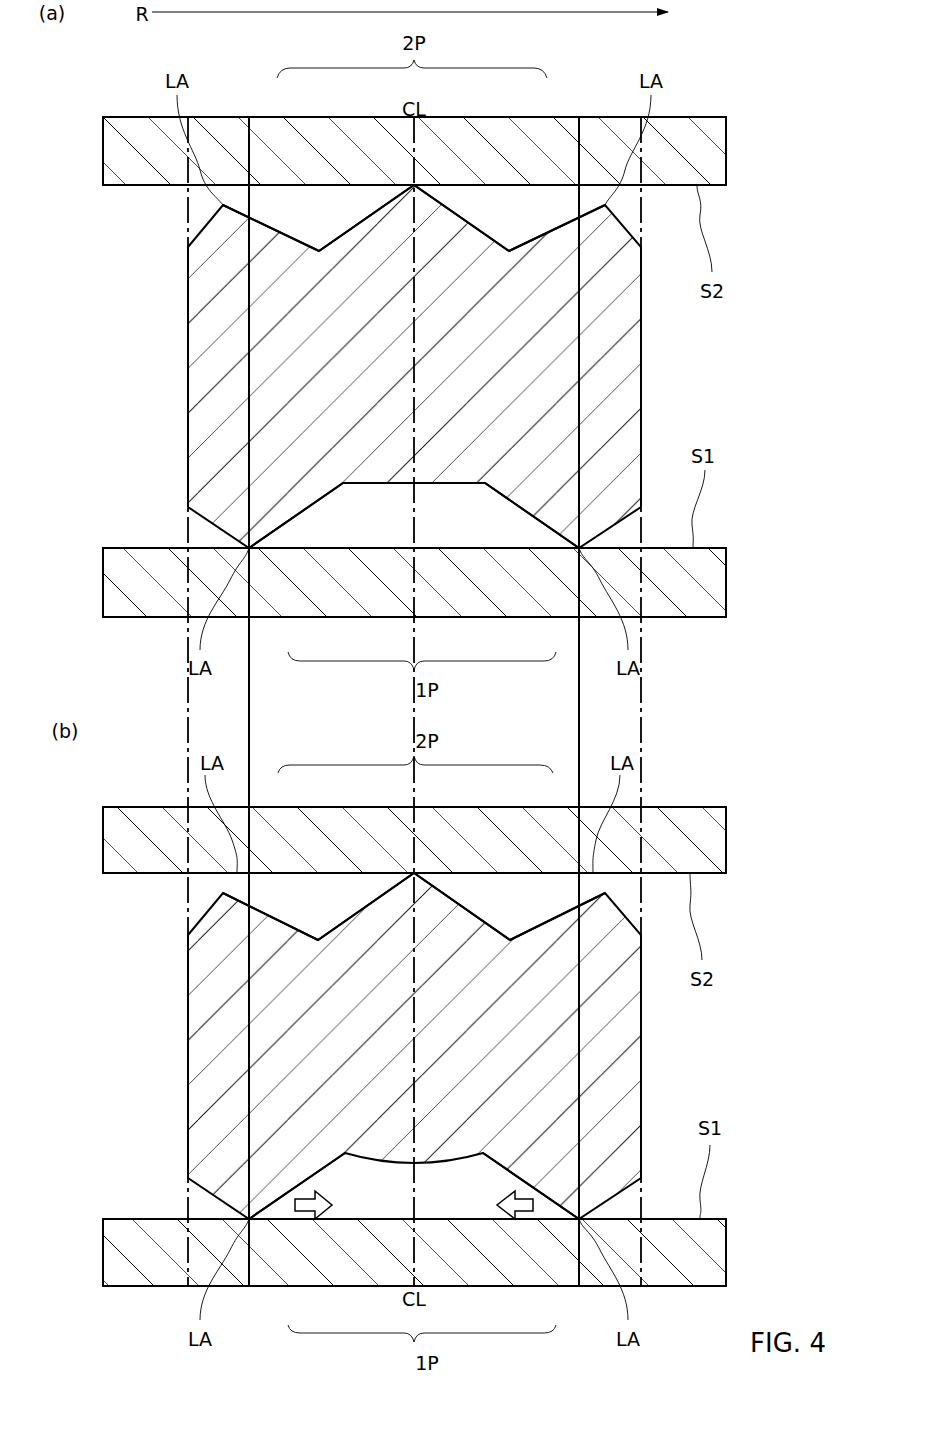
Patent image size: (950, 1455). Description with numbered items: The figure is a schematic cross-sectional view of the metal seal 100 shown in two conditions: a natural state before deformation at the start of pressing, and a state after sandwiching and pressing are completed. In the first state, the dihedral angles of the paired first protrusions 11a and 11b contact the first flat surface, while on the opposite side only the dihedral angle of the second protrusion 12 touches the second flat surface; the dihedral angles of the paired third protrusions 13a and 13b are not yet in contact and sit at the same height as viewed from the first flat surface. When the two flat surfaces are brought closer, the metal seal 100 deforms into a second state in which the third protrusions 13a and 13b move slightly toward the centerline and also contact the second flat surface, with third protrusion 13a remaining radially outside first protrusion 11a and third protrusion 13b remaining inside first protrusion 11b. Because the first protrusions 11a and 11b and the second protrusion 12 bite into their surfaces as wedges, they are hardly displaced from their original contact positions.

The metal seal 100 is at (686, 362).
The first protrusion 11a is at (548, 536).
The first protrusion 11b is at (284, 536).
The second protrusion 12 is at (384, 193).
The third protrusion 13a is at (573, 212).
The third protrusion 13b is at (259, 211).